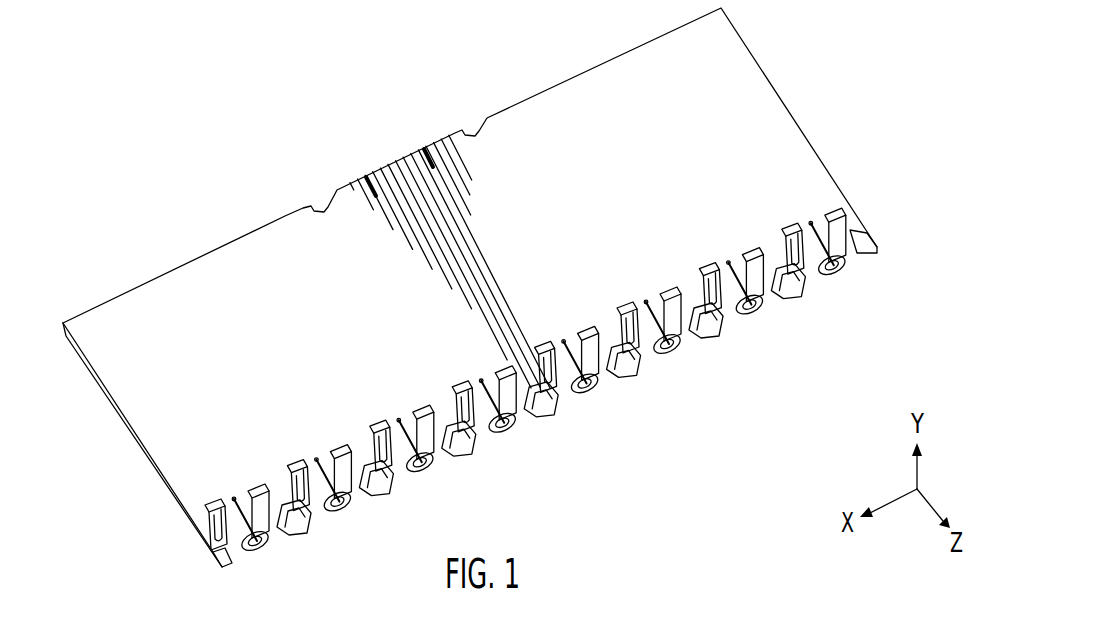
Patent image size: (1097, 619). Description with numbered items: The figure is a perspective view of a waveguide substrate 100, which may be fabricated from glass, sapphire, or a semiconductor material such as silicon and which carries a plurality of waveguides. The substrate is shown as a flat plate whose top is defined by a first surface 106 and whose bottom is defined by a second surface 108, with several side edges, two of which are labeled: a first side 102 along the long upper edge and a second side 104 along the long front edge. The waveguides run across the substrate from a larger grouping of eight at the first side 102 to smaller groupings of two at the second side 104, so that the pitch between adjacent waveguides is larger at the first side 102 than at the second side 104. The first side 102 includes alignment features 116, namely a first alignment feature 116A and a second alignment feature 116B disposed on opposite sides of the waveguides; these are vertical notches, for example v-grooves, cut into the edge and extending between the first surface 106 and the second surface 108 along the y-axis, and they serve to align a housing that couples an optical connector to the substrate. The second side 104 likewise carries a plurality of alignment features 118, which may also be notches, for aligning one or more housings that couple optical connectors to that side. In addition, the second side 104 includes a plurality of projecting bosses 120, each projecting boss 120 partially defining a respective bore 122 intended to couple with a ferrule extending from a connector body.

The waveguide substrate 100 is at (773, 73).
The first side 102 is at (598, 58).
The second side 104 is at (871, 258).
The first surface 106 is at (158, 397).
The second surface 108 is at (152, 470).
The alignment features 116 is at (369, 240).
The first alignment feature 116A is at (312, 203).
The second alignment feature 116B is at (462, 127).
The alignment features 118 is at (815, 295).
The projecting boss 120 is at (700, 356).
The bore 122 is at (666, 357).